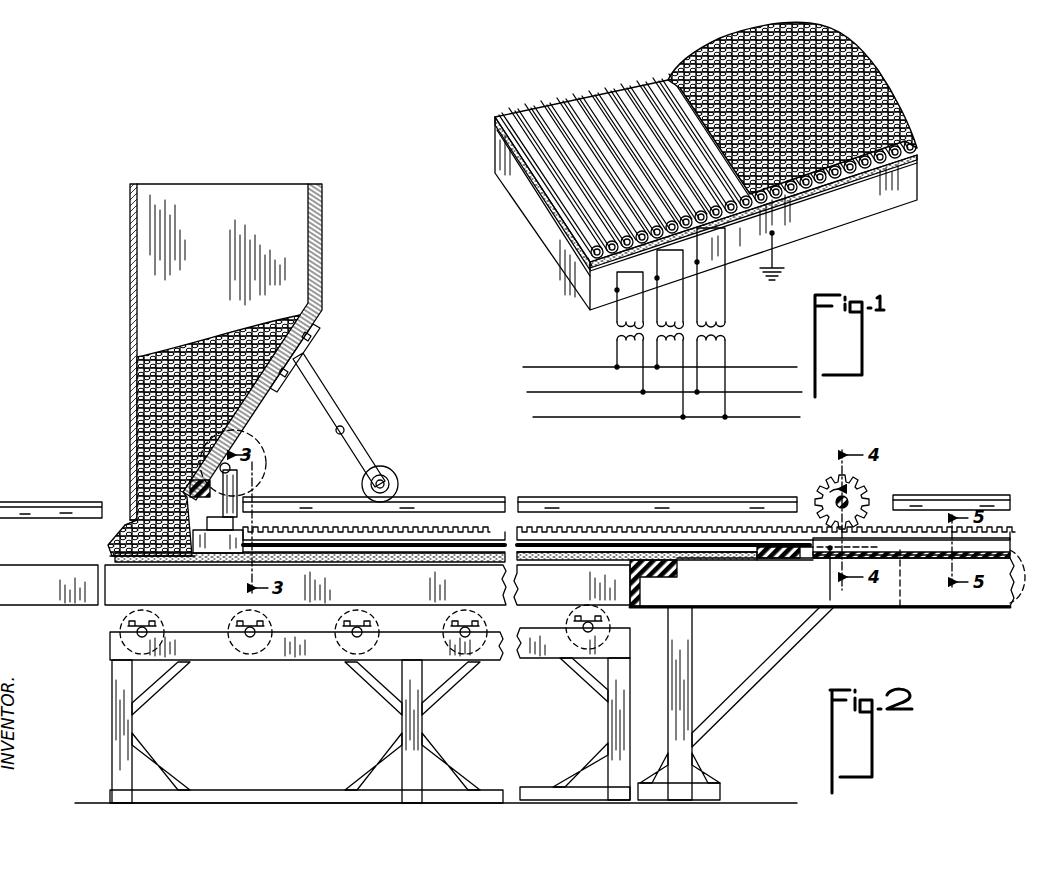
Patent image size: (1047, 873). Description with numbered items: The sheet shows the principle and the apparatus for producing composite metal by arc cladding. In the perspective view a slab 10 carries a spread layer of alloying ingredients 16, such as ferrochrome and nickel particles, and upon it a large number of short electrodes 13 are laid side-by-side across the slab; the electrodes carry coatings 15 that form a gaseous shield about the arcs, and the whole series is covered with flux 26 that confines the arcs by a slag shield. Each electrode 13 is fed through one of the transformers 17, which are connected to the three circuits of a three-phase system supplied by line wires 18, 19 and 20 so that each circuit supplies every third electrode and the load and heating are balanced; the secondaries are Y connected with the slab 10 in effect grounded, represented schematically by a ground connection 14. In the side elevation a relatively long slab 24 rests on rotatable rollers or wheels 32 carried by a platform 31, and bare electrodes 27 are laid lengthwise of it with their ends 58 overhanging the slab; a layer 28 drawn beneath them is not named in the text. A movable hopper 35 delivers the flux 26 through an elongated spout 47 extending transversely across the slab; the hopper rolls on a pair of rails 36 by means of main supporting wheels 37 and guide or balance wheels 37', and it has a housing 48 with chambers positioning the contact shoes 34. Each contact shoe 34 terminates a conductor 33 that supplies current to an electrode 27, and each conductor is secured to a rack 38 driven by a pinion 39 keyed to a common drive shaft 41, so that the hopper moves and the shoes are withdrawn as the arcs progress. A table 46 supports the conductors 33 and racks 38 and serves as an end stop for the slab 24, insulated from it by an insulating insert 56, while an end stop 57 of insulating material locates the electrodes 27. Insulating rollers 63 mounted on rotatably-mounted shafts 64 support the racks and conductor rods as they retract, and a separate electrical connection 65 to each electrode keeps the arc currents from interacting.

In FIG. 1, the slab 10 is at (578, 258).
In FIG. 1, the electrodes 13 is at (572, 96).
In FIG. 1, the ground connection 14 is at (780, 256).
In FIG. 1, the coatings 15 is at (590, 233).
In FIG. 1, the layer of alloying ingredients 16 is at (545, 206).
In FIG. 1, the transformers 17 is at (610, 348).
In FIG. 1, the line wire 18 is at (540, 367).
In FIG. 1, the line wire 19 is at (540, 392).
In FIG. 1, the line wire 20 is at (540, 417).
In FIG. 1, the flux 26 is at (693, 52).
In FIG. 2, the flux 26 is at (113, 545).
In FIG. 2, the slab 24 is at (40, 595).
In FIG. 2, the bare electrodes 27 is at (147, 556).
In FIG. 2, the mat 28 is at (110, 560).
In FIG. 2, the platform 31 is at (205, 660).
In FIG. 2, the rotatable rollers or wheels 32 is at (157, 626).
In FIG. 2, the conductors 33 is at (420, 530).
In FIG. 2, the contact shoe 34 is at (200, 553).
In FIG. 2, the hopper 35 is at (305, 252).
In FIG. 2, the rails 36 is at (30, 503).
In FIG. 2, the main supporting wheels 37 is at (248, 463).
In FIG. 2, the guide wheels or balance wheels 37' is at (347, 413).
In FIG. 2, the racks 38 is at (495, 528).
In FIG. 2, the driving pinion 39 is at (860, 490).
In FIG. 2, the common drive shaft 41 is at (848, 502).
In FIG. 2, the table 46 is at (937, 607).
In FIG. 2, the elongated spout 47 is at (125, 516).
In FIG. 2, the housing or casing 48 is at (252, 486).
In FIG. 2, the insulating insert 56 is at (655, 577).
In FIG. 2, the end stop 57 is at (793, 560).
In FIG. 2, the ends of the electrodes 58 is at (745, 558).
In FIG. 2, the rollers 63 is at (1027, 583).
In FIG. 2, the rotatably-mounted shaft 64 is at (900, 608).
In FIG. 2, the electrical connection 65 is at (834, 604).